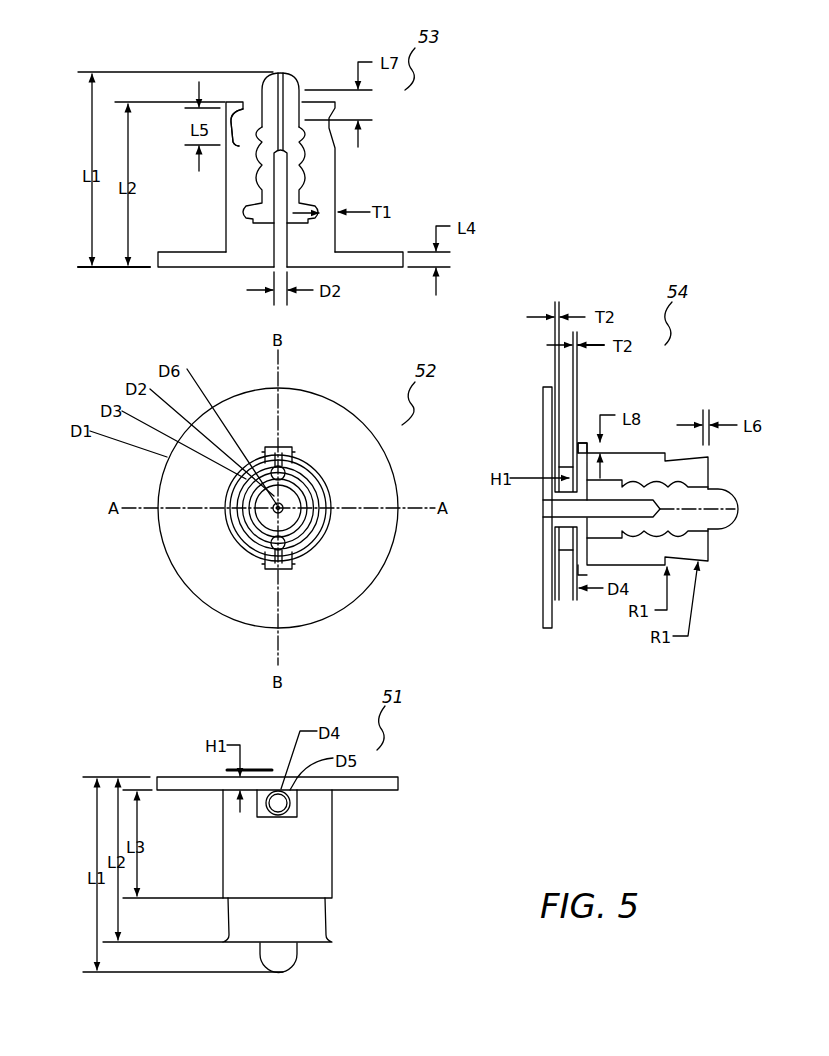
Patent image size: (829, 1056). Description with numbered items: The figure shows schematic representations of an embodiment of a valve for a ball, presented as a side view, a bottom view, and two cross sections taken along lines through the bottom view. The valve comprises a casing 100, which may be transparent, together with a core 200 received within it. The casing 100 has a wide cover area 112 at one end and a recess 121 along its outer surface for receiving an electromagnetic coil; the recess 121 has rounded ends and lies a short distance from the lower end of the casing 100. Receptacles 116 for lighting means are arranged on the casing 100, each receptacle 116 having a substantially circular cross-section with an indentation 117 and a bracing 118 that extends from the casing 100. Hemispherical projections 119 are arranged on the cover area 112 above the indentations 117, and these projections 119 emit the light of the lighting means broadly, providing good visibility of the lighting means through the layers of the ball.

The casing 100 is at (339, 178).
The cover area 112 is at (385, 258).
The receptacles 116 is at (287, 427).
The indentation 117 is at (273, 447).
The bracing 118 is at (300, 437).
The hemispherical projections 119 is at (293, 503).
The recess 121 is at (232, 120).
The core 200 is at (291, 72).